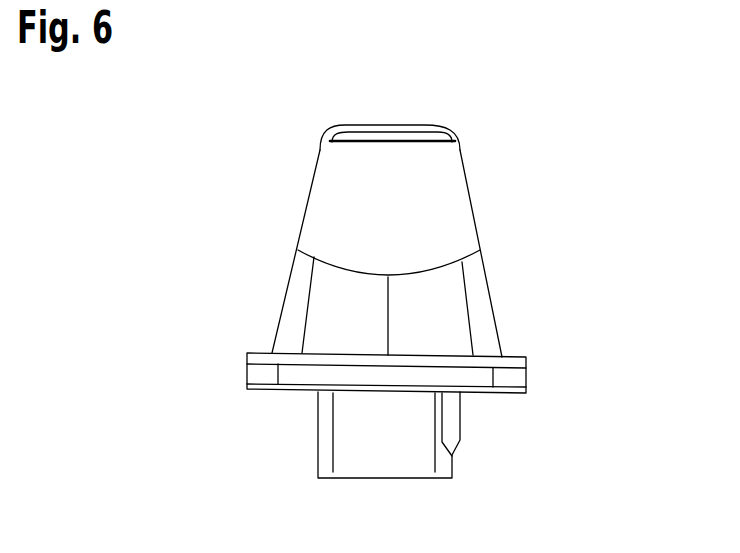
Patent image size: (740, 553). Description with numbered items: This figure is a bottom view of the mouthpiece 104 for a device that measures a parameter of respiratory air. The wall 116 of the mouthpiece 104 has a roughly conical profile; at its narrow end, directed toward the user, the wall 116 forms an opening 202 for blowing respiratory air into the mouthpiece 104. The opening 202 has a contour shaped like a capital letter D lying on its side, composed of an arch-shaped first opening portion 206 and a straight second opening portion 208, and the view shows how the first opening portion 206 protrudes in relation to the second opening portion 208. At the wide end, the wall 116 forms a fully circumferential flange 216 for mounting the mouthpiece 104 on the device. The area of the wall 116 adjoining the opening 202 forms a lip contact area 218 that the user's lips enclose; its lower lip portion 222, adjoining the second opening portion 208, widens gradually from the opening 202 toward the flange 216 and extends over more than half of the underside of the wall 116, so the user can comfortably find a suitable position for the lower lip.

The mouthpiece 104 is at (215, 150).
The opening 202 is at (410, 127).
The first opening portion 206 is at (372, 121).
The second opening portion 208 is at (360, 150).
The lower lip portion 222 is at (413, 203).
The lip contact area 218 is at (488, 210).
The wall 116 is at (493, 307).
The flange 216 is at (527, 377).